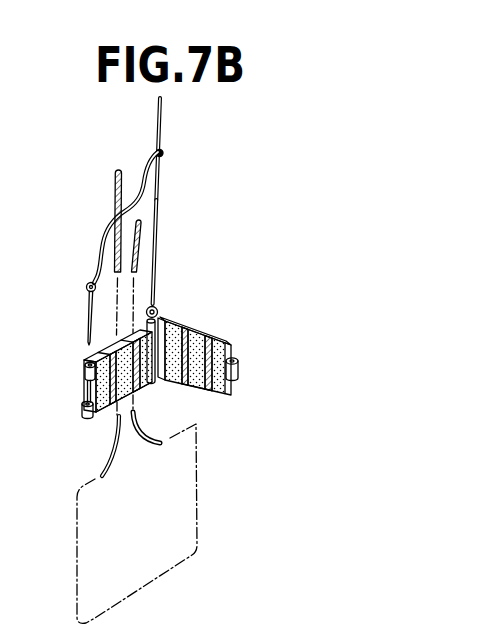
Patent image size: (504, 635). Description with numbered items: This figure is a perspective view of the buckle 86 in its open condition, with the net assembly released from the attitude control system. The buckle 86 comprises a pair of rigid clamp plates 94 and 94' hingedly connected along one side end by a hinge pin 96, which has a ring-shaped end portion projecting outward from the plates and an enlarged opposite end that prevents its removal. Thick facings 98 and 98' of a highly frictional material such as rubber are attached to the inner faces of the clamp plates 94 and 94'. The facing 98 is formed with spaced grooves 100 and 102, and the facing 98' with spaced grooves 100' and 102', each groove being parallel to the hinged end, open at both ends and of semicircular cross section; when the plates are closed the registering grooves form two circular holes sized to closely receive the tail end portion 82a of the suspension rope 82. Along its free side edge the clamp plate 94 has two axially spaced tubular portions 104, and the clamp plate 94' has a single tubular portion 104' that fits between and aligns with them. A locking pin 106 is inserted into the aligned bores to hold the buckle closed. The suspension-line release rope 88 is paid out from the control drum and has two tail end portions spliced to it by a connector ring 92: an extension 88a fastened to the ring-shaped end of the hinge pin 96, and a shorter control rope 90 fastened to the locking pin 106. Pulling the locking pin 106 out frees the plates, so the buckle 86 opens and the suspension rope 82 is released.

The suspension rope 82 is at (114, 196).
The tail end portion of the suspension line 82a is at (139, 257).
The buckle 86 is at (199, 402).
The suspension-line release rope 88 is at (162, 116).
The extension of the release rope 88a is at (157, 233).
The control rope 90 is at (143, 168).
The connector ring 92 is at (164, 154).
The clamp plate 94 is at (96, 368).
The clamp plate 94' is at (224, 356).
The hinge pin 96 is at (159, 307).
The facing 98 is at (103, 417).
The facing 98' is at (221, 414).
The groove 100 is at (91, 446).
The groove 100' is at (247, 348).
The groove 102 is at (157, 416).
The groove 102' is at (214, 335).
The tubular portions 104 is at (56, 391).
The tubular portion 104' is at (265, 372).
The locking pin 106 is at (88, 312).